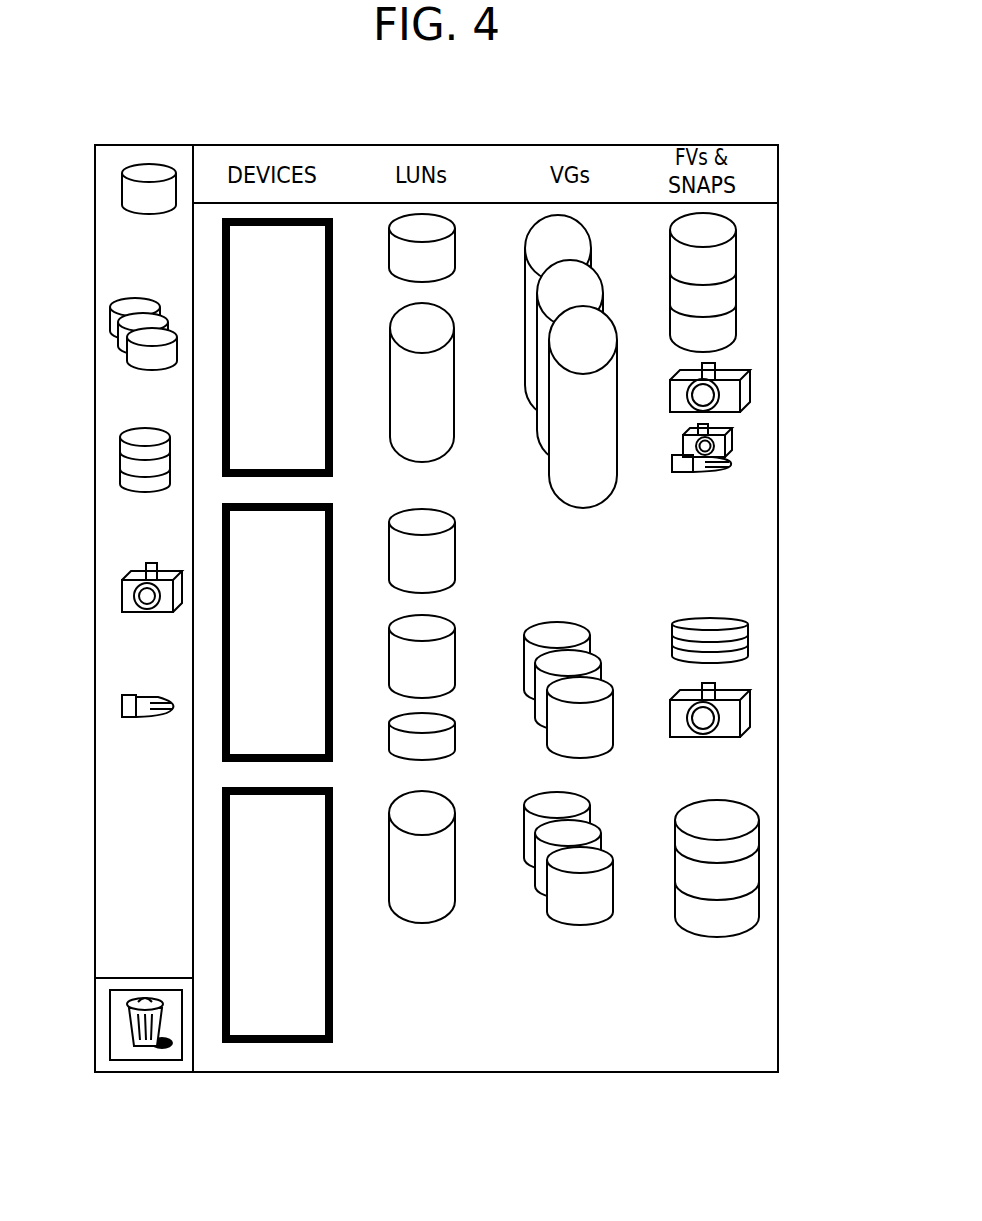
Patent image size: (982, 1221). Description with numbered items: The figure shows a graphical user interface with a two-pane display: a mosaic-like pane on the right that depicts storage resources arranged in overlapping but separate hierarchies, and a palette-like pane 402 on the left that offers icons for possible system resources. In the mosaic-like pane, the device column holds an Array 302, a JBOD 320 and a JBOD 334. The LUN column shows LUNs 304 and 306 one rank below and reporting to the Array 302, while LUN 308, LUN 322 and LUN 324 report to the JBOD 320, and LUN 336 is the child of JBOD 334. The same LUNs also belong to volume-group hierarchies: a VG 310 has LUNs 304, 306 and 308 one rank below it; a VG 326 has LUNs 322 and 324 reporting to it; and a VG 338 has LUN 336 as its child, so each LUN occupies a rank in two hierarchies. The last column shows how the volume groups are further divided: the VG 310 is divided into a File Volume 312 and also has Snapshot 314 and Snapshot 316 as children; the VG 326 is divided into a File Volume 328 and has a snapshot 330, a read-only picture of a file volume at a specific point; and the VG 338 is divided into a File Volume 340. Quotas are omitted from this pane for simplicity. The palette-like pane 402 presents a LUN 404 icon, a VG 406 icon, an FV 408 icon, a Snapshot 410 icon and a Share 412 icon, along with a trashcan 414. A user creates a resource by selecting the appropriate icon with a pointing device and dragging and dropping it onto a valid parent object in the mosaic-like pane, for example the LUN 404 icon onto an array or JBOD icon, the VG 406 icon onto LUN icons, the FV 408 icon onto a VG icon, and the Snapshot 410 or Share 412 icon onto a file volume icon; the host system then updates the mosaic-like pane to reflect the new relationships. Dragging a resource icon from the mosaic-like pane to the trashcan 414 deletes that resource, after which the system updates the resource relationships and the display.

The Array 302 is at (333, 300).
The LUN 304 is at (455, 248).
The LUN 306 is at (455, 372).
The LUN 308 is at (455, 556).
The VG 310 is at (582, 508).
The File Volume 312 is at (737, 283).
The Snapshot 314 is at (750, 392).
The Snapshot 316 is at (735, 445).
The JBOD 320 is at (333, 587).
The LUN 322 is at (455, 660).
The LUN 324 is at (455, 740).
The VG 326 is at (582, 758).
The File Volume 328 is at (713, 619).
The snapshot 330 is at (750, 712).
The JBOD 334 is at (333, 958).
The LUN 336 is at (455, 845).
The VG 338 is at (582, 925).
The File Volume 340 is at (717, 937).
The palette-like pane 402 is at (95, 890).
The LUN icon 404 is at (122, 190).
The VG icon 406 is at (112, 320).
The FV icon 408 is at (120, 452).
The Snapshot icon 410 is at (122, 594).
The Share icon 412 is at (122, 710).
The trashcan 414 is at (118, 1010).